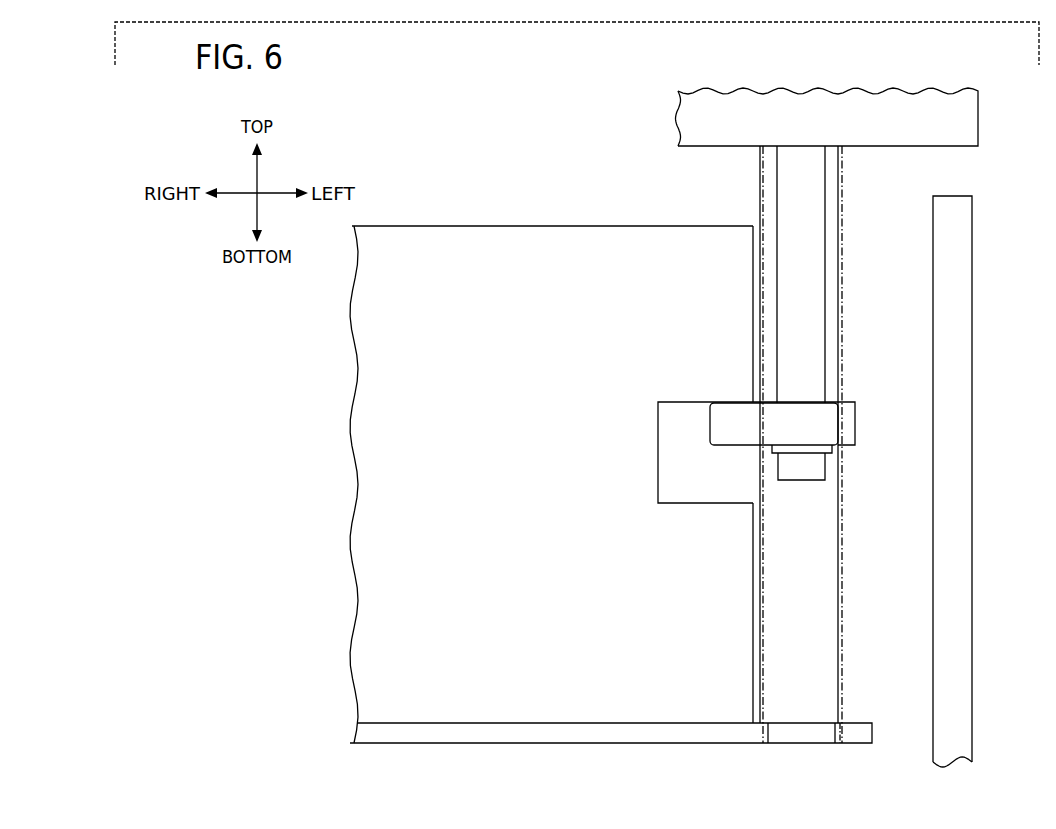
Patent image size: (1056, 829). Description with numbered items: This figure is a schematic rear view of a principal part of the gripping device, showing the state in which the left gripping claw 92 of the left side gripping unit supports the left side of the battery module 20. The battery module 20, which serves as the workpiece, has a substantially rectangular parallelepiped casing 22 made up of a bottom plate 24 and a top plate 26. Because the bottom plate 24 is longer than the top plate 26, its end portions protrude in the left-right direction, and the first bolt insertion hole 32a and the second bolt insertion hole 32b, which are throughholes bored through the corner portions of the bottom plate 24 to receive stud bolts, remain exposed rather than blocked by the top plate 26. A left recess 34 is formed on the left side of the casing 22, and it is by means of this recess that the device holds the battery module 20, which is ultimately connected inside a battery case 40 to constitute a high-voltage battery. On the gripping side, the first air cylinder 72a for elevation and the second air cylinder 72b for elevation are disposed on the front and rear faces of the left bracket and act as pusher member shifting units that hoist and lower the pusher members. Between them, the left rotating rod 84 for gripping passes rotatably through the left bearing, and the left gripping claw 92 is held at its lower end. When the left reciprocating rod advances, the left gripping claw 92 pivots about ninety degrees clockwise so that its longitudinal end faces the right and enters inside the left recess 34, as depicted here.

The battery module 20 is at (543, 223).
The casing 22 is at (447, 744).
The bottom plate 24 is at (857, 722).
The top plate 26 is at (615, 225).
The first bolt insertion hole 32a is at (835, 728).
The second bolt insertion hole 32b is at (772, 728).
The left recess 34 is at (683, 403).
The battery case 40 is at (962, 249).
The first air cylinder for elevation 72a is at (845, 565).
The second air cylinder for elevation 72b is at (827, 526).
The left rotating rod 84 is at (813, 320).
The left gripping claw 92 is at (733, 433).